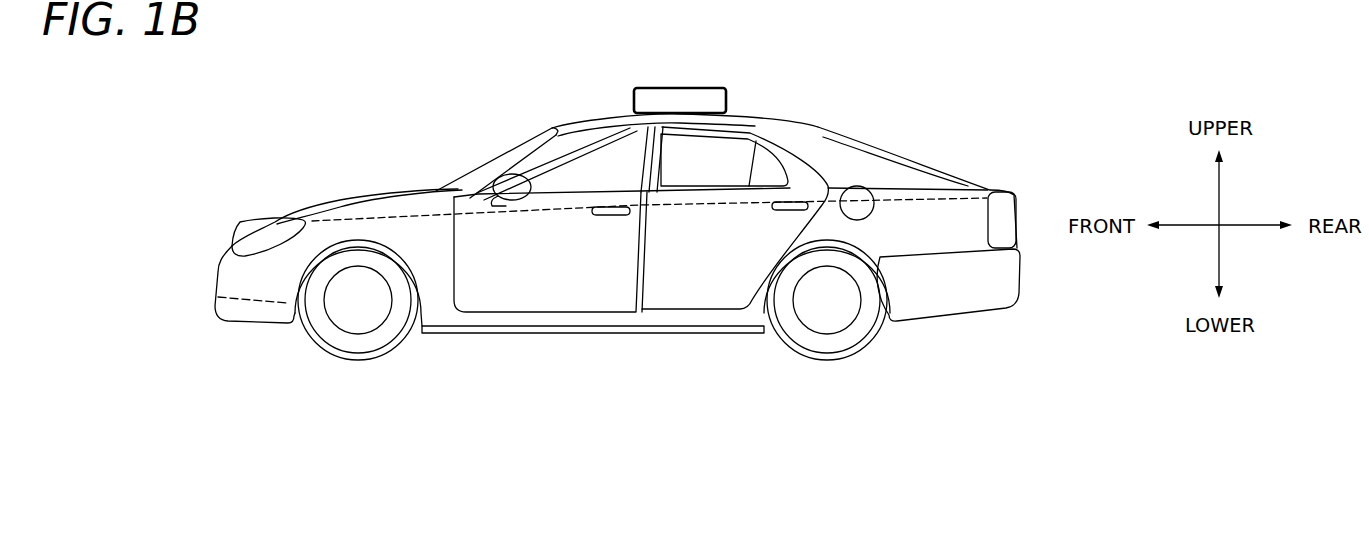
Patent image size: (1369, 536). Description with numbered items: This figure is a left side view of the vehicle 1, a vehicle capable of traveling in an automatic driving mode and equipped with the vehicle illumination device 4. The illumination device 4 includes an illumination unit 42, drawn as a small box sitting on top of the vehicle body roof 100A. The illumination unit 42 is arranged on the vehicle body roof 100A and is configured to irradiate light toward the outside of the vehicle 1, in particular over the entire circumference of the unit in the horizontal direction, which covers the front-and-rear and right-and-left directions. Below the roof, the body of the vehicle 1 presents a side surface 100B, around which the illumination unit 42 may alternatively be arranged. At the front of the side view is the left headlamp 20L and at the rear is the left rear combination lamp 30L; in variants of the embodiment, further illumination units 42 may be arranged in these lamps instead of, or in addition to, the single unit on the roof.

The vehicle 1 is at (640, 192).
The vehicle illumination device 4 is at (716, 65).
The illumination unit 42 is at (726, 88).
The vehicle body roof 100A is at (782, 118).
The side surface 100B is at (555, 298).
The left headlamp 20L is at (250, 231).
The left rear combination lamp 30L is at (1010, 207).